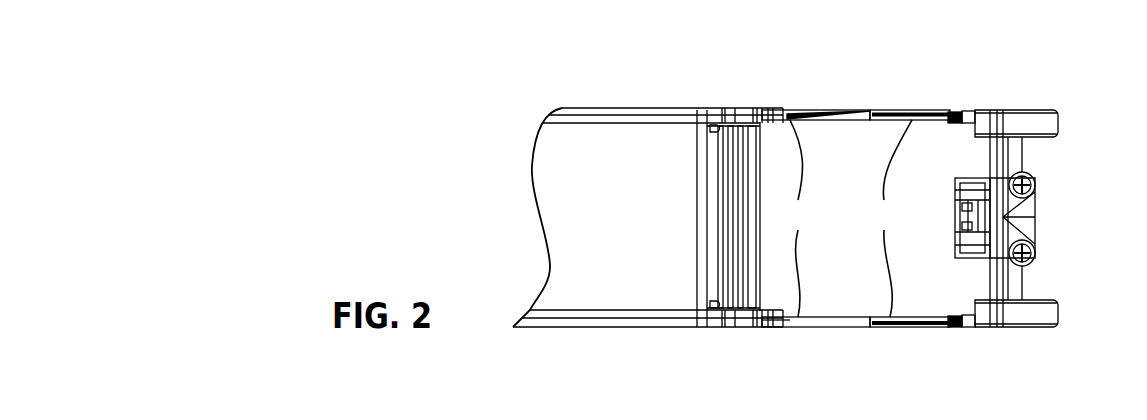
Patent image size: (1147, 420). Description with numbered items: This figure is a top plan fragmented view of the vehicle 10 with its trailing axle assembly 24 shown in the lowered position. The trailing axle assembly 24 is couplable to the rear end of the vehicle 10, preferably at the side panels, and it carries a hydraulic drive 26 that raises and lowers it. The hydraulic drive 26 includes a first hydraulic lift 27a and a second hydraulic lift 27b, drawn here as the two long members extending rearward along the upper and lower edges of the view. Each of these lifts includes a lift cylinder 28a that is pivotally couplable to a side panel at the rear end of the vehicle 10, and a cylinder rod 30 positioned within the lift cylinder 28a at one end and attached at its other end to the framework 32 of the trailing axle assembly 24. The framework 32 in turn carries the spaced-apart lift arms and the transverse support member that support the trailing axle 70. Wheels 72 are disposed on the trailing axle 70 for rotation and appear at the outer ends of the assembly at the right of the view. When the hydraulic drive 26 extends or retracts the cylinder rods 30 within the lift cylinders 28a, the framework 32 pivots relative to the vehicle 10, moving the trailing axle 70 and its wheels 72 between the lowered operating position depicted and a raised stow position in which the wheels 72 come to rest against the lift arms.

The vehicle 10 is at (513, 207).
The hydraulic drive 26 is at (868, 75).
The first hydraulic lift 27a is at (847, 327).
The second hydraulic lift 27b is at (797, 105).
The framework 32 is at (915, 97).
The lift cylinder 28a is at (798, 218).
The cylinder rod 30 is at (892, 218).
The wheels 72 is at (1058, 128).
The trailing axle 70 is at (1018, 283).
The trailing axle assembly 24 is at (1052, 217).